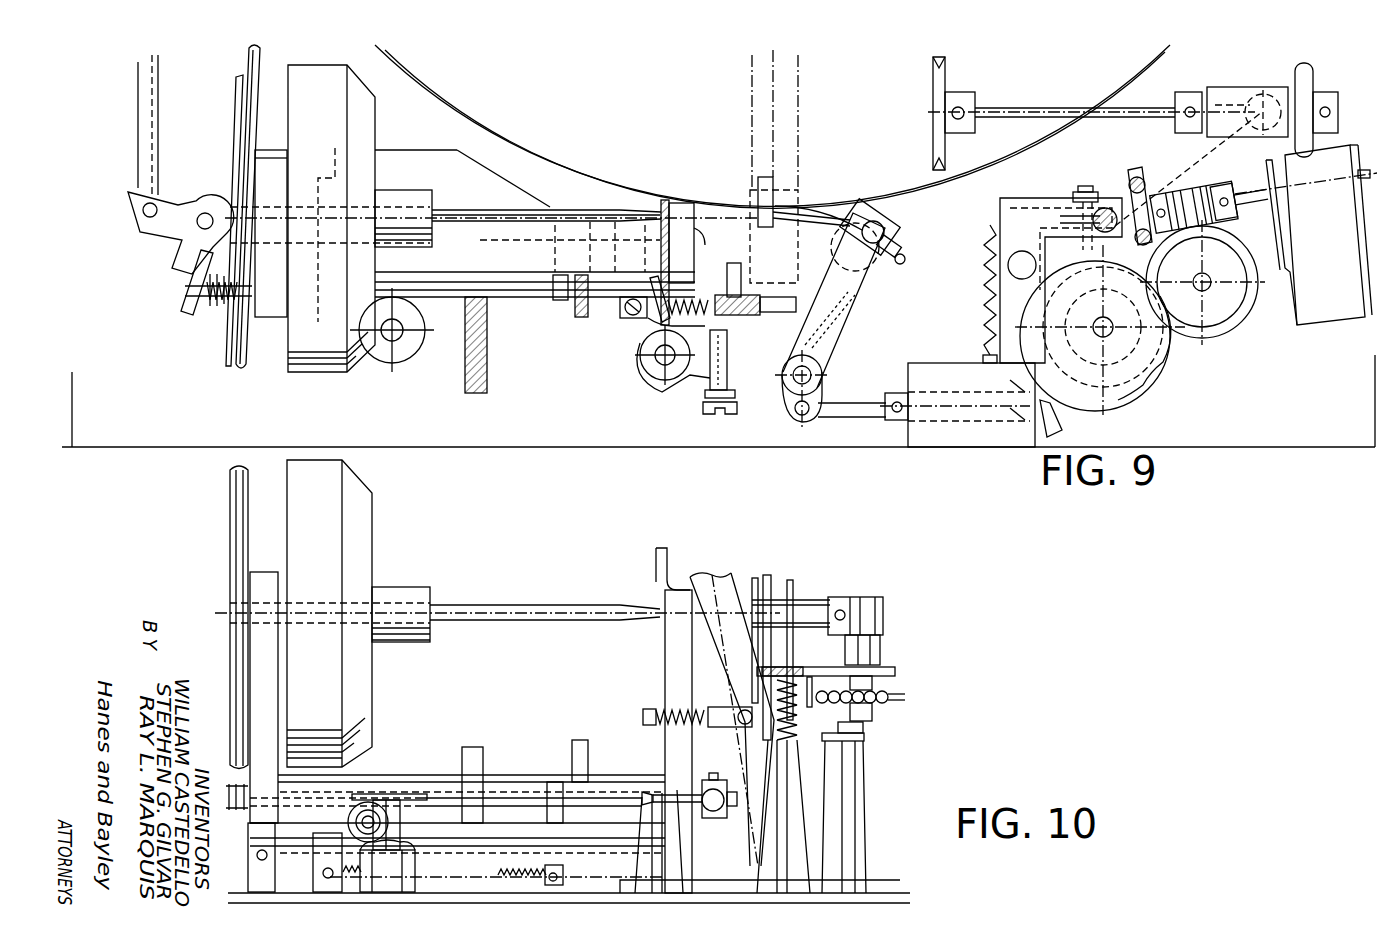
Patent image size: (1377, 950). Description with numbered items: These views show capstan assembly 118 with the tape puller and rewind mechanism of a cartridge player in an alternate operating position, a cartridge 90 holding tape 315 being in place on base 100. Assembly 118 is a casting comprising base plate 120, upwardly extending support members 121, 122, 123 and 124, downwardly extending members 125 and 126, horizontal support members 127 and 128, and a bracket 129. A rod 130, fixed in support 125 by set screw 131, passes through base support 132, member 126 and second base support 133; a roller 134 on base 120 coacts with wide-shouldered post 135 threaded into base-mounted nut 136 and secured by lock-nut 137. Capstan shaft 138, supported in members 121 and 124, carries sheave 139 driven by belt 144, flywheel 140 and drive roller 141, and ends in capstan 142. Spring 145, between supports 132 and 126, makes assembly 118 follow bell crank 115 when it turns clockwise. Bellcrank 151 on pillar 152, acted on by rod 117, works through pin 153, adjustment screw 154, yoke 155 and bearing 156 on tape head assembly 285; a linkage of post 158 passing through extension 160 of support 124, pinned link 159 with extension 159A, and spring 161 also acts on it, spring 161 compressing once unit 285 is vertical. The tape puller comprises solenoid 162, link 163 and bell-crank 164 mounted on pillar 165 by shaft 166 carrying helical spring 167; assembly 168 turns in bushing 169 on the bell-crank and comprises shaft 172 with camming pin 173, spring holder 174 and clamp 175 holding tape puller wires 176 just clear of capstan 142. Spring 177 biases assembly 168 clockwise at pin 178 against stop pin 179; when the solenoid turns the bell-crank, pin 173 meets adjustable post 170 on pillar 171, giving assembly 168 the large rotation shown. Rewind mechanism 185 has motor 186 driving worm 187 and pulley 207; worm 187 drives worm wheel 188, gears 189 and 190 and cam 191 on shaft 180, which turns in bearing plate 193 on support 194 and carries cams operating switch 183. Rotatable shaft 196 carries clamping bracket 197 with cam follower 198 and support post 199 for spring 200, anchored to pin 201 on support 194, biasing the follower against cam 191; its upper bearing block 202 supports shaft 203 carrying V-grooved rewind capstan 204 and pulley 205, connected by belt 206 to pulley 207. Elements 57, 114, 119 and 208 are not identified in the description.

In FIG. 9, the outer shell arc 57 is at (478, 110).
In FIG. 9, the cartridge 90 is at (803, 120).
In FIG. 9, the base 100 is at (416, 425).
In FIG. 9, the guide rails 114 is at (156, 130).
In FIG. 9, the bell crank 115 is at (207, 208).
In FIG. 9, the rod 117 is at (196, 307).
In FIG. 10, the rod 117 is at (523, 807).
In FIG. 9, the capstan assembly 118 is at (264, 379).
In FIG. 10, the capstan assembly 118 is at (228, 570).
In FIG. 9, the washers 119 is at (214, 302).
In FIG. 10, the washers 119 is at (236, 810).
In FIG. 9, the base plate 120 is at (468, 163).
In FIG. 10, the base plate 120 is at (510, 790).
In FIG. 9, the upwardly extending support member 121 is at (265, 152).
In FIG. 10, the upwardly extending support member 121 is at (262, 590).
In FIG. 9, the upwardly extending support member 122 is at (482, 360).
In FIG. 10, the upwardly extending support member 122 is at (470, 745).
In FIG. 9, the upwardly extending support member 123 is at (590, 318).
In FIG. 10, the upwardly extending support member 123 is at (576, 742).
In FIG. 9, the upwardly extending support member 124 is at (680, 200).
In FIG. 10, the upwardly extending support member 124 is at (672, 658).
In FIG. 10, the downwardly extending member 125 is at (258, 893).
In FIG. 9, the downwardly extending member 126 is at (594, 207).
In FIG. 10, the downwardly extending member 126 is at (558, 892).
In FIG. 9, the horizontally extending support member 127 is at (270, 318).
In FIG. 10, the horizontally extending support member 127 is at (270, 822).
In FIG. 9, the horizontally extending support member 128 is at (560, 300).
In FIG. 10, the horizontally extending support member 128 is at (562, 745).
In FIG. 9, the bracket 129 is at (663, 200).
In FIG. 10, the bracket 129 is at (655, 564).
In FIG. 10, the rod 130 is at (476, 844).
In FIG. 10, the set screw 131 is at (256, 856).
In FIG. 9, the base support 132 is at (338, 150).
In FIG. 10, the base support 132 is at (325, 896).
In FIG. 9, the second base support 133 is at (612, 198).
In FIG. 10, the second base support 133 is at (620, 900).
In FIG. 9, the roller 134 is at (410, 307).
In FIG. 10, the roller 134 is at (348, 817).
In FIG. 9, the wide-shouldered post 135 is at (410, 347).
In FIG. 10, the wide-shouldered post 135 is at (365, 795).
In FIG. 10, the base-mounted nut 136 is at (388, 897).
In FIG. 10, the lock-nut 137 is at (410, 849).
In FIG. 9, the capstan shaft 138 is at (440, 212).
In FIG. 10, the capstan shaft 138 is at (470, 607).
In FIG. 9, the sheave 139 is at (232, 139).
In FIG. 10, the sheave 139 is at (230, 522).
In FIG. 9, the flywheel 140 is at (358, 135).
In FIG. 10, the flywheel 140 is at (358, 520).
In FIG. 9, the drive roller 141 is at (390, 190).
In FIG. 9, the capstan 142 is at (748, 200).
In FIG. 10, the capstan 142 is at (748, 578).
In FIG. 9, the belt 144 is at (250, 54).
In FIG. 10, the belt 144 is at (232, 477).
In FIG. 10, the spring 145 is at (468, 893).
In FIG. 9, the bellcrank 151 is at (642, 364).
In FIG. 10, the bellcrank 151 is at (700, 787).
In FIG. 10, the pillar 152 is at (676, 880).
In FIG. 9, the pin 153 is at (690, 380).
In FIG. 9, the adjustment screw 154 is at (726, 418).
In FIG. 9, the yoke 155 is at (712, 387).
In FIG. 10, the yoke 155 is at (708, 820).
In FIG. 9, the bearing 156 is at (738, 266).
In FIG. 9, the post 158 is at (652, 327).
In FIG. 10, the post 158 is at (648, 709).
In FIG. 9, the pinned link 159 is at (676, 318).
In FIG. 10, the pinned link 159 is at (748, 710).
In FIG. 9, the extension 159A is at (696, 233).
In FIG. 10, the extension 160 is at (648, 727).
In FIG. 9, the spring 161 is at (700, 298).
In FIG. 10, the spring 161 is at (710, 728).
In FIG. 9, the solenoid 162 is at (945, 447).
In FIG. 9, the link 163 is at (840, 412).
In FIG. 9, the bell-crank 164 is at (788, 414).
In FIG. 10, the bell-crank 164 is at (895, 674).
In FIG. 10, the pillar 165 is at (785, 897).
In FIG. 10, the extending shaft 166 is at (840, 730).
In FIG. 9, the helical spring 167 is at (822, 344).
In FIG. 10, the helical spring 167 is at (790, 667).
In FIG. 9, the assembly 168 is at (910, 270).
In FIG. 10, the assembly 168 is at (902, 597).
In FIG. 10, the bushing 169 is at (873, 645).
In FIG. 9, the adjustable post 170 is at (895, 220).
In FIG. 9, the pillar 171 is at (832, 252).
In FIG. 10, the pillar 171 is at (848, 832).
In FIG. 10, the shaft 172 is at (868, 715).
In FIG. 9, the camming pin 173 is at (902, 248).
In FIG. 10, the camming pin 173 is at (873, 683).
In FIG. 9, the spring holder 174 is at (906, 263).
In FIG. 10, the spring holder 174 is at (908, 698).
In FIG. 9, the clamp 175 is at (862, 207).
In FIG. 10, the clamp 175 is at (838, 597).
In FIG. 9, the tape puller wires 176 is at (828, 214).
In FIG. 10, the tape puller wires 176 is at (798, 612).
In FIG. 9, the spring 177 is at (862, 302).
In FIG. 10, the spring 177 is at (875, 708).
In FIG. 9, the pin 178 is at (840, 342).
In FIG. 10, the pin 178 is at (812, 688).
In FIG. 9, the pin 179 is at (852, 280).
In FIG. 10, the pin 179 is at (855, 722).
In FIG. 9, the shaft 180 is at (1097, 318).
In FIG. 9, the switch 183 is at (1045, 397).
In FIG. 9, the tape rewind mechanism 185 is at (1270, 359).
In FIG. 9, the motor 186 is at (1323, 320).
In FIG. 9, the worm 187 is at (1190, 190).
In FIG. 9, the worm wheel 188 is at (1238, 320).
In FIG. 9, the gear 189 is at (1213, 337).
In FIG. 9, the gear 190 is at (1165, 372).
In FIG. 9, the cam 191 is at (1136, 392).
In FIG. 9, the bearing plate 193 is at (1068, 247).
In FIG. 9, the support 194 is at (1040, 337).
In FIG. 9, the rotatable shaft 196 is at (1110, 207).
In FIG. 9, the adjustable clamping bracket 197 is at (1058, 202).
In FIG. 9, the cam follower 198 is at (1030, 220).
In FIG. 9, the support post 199 is at (1000, 204).
In FIG. 9, the spring 200 is at (982, 342).
In FIG. 9, the pin 201 is at (983, 359).
In FIG. 9, the bearing block 202 is at (1217, 92).
In FIG. 9, the shaft 203 is at (1045, 110).
In FIG. 9, the rewind capstan 204 is at (948, 80).
In FIG. 9, the pulley 205 is at (1315, 87).
In FIG. 9, the belt 206 is at (1131, 180).
In FIG. 9, the pulley 207 is at (1148, 182).
In FIG. 9, the spring rod 208 is at (215, 284).
In FIG. 9, the tape head assembly 285 is at (768, 321).
In FIG. 10, the tape head assembly 285 is at (713, 570).
In FIG. 9, the tape 315 is at (778, 202).
In FIG. 10, the tape 315 is at (770, 574).